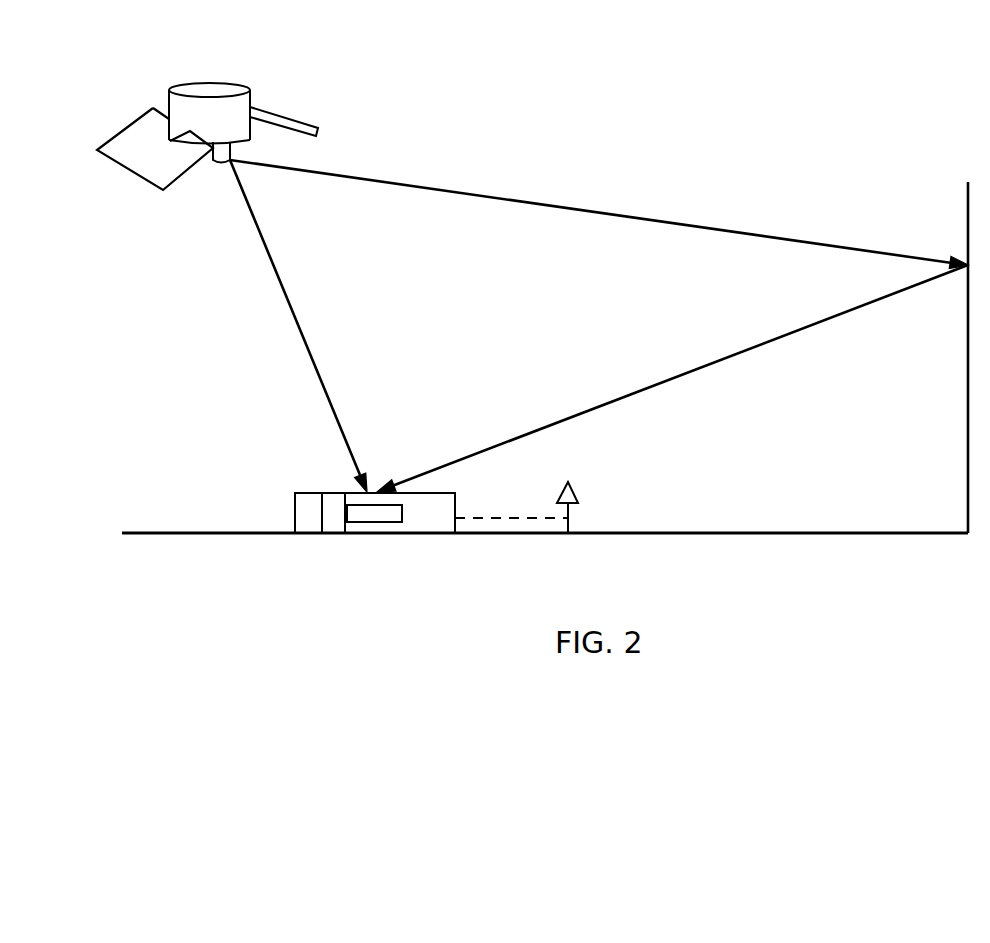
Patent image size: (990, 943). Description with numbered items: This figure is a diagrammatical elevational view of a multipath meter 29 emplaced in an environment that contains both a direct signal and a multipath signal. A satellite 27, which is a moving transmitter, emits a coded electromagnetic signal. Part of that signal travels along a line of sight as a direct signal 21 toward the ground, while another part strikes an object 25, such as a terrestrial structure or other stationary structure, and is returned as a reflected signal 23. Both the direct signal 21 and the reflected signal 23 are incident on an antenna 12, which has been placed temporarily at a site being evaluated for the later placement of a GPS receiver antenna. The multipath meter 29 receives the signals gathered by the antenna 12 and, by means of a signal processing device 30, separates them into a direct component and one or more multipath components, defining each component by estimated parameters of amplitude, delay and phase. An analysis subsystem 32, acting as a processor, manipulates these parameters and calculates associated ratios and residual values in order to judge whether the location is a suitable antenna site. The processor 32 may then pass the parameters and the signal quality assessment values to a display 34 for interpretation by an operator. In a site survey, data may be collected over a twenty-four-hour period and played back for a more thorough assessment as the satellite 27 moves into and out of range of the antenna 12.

The satellite 27 is at (208, 88).
The direct signal 21 is at (288, 297).
The reflected signal 23 is at (610, 398).
The object 25 is at (967, 438).
The signal processing device 30 is at (308, 514).
The analysis subsystem 32 is at (348, 518).
The display 34 is at (375, 518).
The multipath meter 29 is at (456, 505).
The antenna 12 is at (574, 495).